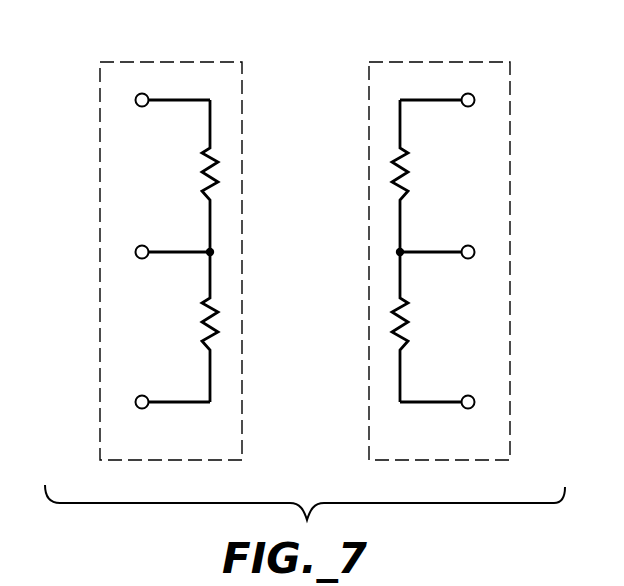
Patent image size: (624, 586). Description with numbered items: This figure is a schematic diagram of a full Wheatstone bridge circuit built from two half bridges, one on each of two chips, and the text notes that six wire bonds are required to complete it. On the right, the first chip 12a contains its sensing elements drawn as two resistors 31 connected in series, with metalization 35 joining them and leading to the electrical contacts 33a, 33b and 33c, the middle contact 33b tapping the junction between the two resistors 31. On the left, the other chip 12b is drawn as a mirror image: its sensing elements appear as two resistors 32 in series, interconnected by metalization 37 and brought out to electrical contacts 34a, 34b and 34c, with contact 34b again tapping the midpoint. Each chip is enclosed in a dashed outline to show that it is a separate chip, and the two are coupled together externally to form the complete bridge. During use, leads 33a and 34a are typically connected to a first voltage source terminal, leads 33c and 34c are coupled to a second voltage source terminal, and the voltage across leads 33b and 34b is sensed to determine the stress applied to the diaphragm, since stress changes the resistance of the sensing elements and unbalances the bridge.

The first chip 12a is at (428, 62).
The another chip 12b is at (177, 62).
The resistors 31 is at (410, 168).
The resistors 32 is at (200, 170).
The electrical contact 33a is at (476, 100).
The electrical contact 33b is at (476, 252).
The electrical contact 33c is at (477, 405).
The electrical contact 34a is at (135, 100).
The electrical contact 34b is at (135, 252).
The electrical contact 34c is at (135, 403).
The metalization 35 is at (399, 122).
The metalization 37 is at (211, 122).